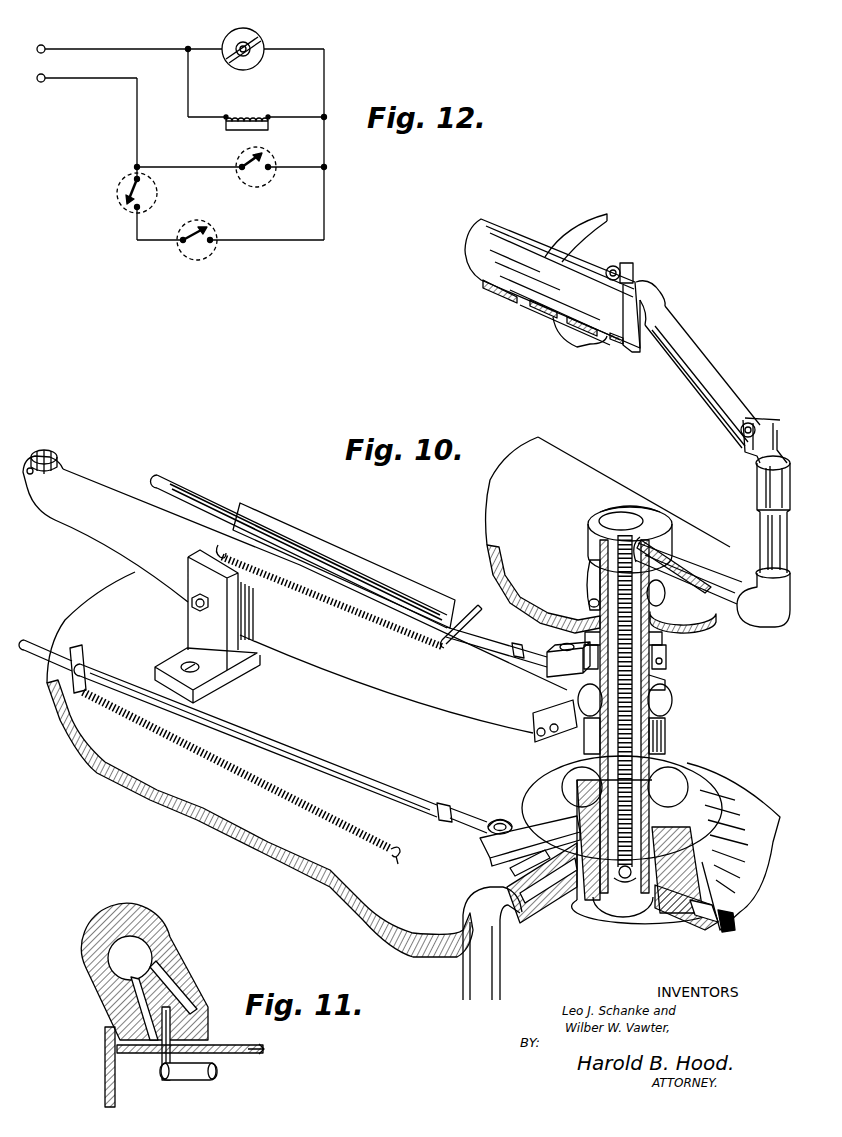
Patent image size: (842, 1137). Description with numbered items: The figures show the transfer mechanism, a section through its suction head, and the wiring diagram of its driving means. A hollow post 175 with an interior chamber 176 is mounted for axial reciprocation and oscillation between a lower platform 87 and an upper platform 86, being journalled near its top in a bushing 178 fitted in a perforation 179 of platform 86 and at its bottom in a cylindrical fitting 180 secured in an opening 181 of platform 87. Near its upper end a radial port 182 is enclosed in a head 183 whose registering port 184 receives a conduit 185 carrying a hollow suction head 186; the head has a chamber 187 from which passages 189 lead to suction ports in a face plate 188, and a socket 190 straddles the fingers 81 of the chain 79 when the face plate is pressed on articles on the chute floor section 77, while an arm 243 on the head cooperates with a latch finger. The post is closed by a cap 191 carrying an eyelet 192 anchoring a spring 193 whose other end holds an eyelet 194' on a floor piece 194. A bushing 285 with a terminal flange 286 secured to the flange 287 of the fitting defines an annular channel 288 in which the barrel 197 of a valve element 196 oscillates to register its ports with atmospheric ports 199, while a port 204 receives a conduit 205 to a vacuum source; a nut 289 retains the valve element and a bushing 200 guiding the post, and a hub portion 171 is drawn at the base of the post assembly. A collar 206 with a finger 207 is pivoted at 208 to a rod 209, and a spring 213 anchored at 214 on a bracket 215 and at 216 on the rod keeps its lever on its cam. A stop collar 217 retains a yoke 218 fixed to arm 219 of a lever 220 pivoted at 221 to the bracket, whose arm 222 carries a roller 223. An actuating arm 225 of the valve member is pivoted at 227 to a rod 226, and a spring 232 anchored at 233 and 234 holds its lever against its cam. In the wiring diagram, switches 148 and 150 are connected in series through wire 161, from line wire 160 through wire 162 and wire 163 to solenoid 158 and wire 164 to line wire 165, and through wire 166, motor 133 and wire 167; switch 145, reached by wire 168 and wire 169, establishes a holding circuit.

In FIG. 12, the line wire 165 is at (82, 47).
In FIG. 12, the line wire 160 is at (92, 82).
In FIG. 12, the wire 167 is at (202, 46).
In FIG. 12, the electric motor 133 is at (265, 40).
In FIG. 12, the wire 166 is at (328, 67).
In FIG. 12, the wire 164 is at (188, 100).
In FIG. 12, the solenoid 158 is at (236, 135).
In FIG. 12, the wire 163 is at (298, 120).
In FIG. 12, the wire 169 is at (296, 166).
In FIG. 12, the wire 168 is at (210, 166).
In FIG. 12, the switch 145 is at (273, 173).
In FIG. 12, the switch 148 is at (117, 186).
In FIG. 12, the wire 161 is at (145, 242).
In FIG. 12, the switch 150 is at (212, 258).
In FIG. 12, the wire 162 is at (289, 245).
In FIG. 10, the suction head 186 is at (512, 237).
In FIG. 11, the suction head 186 is at (108, 917).
In FIG. 10, the arm 243 is at (608, 216).
In FIG. 10, the face plate 188 is at (553, 322).
In FIG. 11, the face plate 188 is at (207, 1047).
In FIG. 10, the socket 190 is at (652, 337).
In FIG. 11, the socket 190 is at (173, 1013).
In FIG. 10, the platform 86 is at (580, 467).
In FIG. 10, the cap 191 is at (615, 525).
In FIG. 10, the eyelet 192 is at (631, 527).
In FIG. 10, the head 183 is at (635, 508).
In FIG. 10, the radial port 182 is at (638, 545).
In FIG. 10, the registering port 184 is at (670, 547).
In FIG. 10, the conduit 185 is at (690, 563).
In FIG. 10, the hollow post 175 is at (600, 583).
In FIG. 10, the perforation 179 is at (589, 603).
In FIG. 10, the bushing 178 is at (660, 596).
In FIG. 10, the spring 193 is at (630, 642).
In FIG. 10, the collar 206 is at (667, 655).
In FIG. 10, the chamber 176 is at (681, 684).
In FIG. 10, the stop collar 217 is at (668, 697).
In FIG. 10, the yoke 218 is at (673, 737).
In FIG. 10, the bushing 200 is at (674, 768).
In FIG. 10, the valve element 196 is at (707, 780).
In FIG. 10, the cylindrical fitting 180 is at (723, 787).
In FIG. 10, the nut 289 is at (572, 783).
In FIG. 10, the pivot connection 208 is at (565, 643).
In FIG. 10, the finger 207 is at (532, 637).
In FIG. 10, the anchor point 216 is at (462, 612).
In FIG. 10, the rod 209 is at (383, 588).
In FIG. 10, the spring 213 is at (325, 610).
In FIG. 10, the arm 219 is at (478, 720).
In FIG. 10, the rod 226 is at (340, 766).
In FIG. 10, the spring 232 is at (277, 797).
In FIG. 10, the anchor point 233 is at (404, 850).
In FIG. 10, the pivot connection 227 is at (500, 820).
In FIG. 10, the actuating arm 225 is at (488, 855).
In FIG. 10, the opening 181 is at (533, 862).
In FIG. 10, the hub 171 is at (577, 825).
In FIG. 10, the annular channel 288 is at (585, 900).
In FIG. 10, the port 204 is at (560, 913).
In FIG. 10, the barrel 197 is at (595, 907).
In FIG. 10, the eyelet 194' is at (618, 904).
In FIG. 10, the floor piece 194 is at (642, 925).
In FIG. 10, the bushing 285 is at (648, 912).
In FIG. 10, the ports 199 is at (687, 912).
In FIG. 10, the flange 287 is at (722, 925).
In FIG. 10, the terminal flange 286 is at (732, 925).
In FIG. 10, the conduit 205 is at (513, 930).
In FIG. 10, the roller 223 is at (40, 450).
In FIG. 10, the arm 222 is at (102, 490).
In FIG. 10, the lever 220 is at (218, 545).
In FIG. 10, the anchor point 214 is at (232, 556).
In FIG. 10, the pivot 221 is at (192, 603).
In FIG. 10, the platform 87 is at (90, 610).
In FIG. 10, the anchor point 234 is at (84, 653).
In FIG. 10, the bracket 215 is at (250, 660).
In FIG. 11, the chamber 187 is at (137, 938).
In FIG. 11, the passages 189 is at (178, 980).
In FIG. 11, the fingers 81 is at (170, 1023).
In FIG. 11, the chain 79 is at (188, 1081).
In FIG. 11, the chute floor section 77 is at (257, 1062).